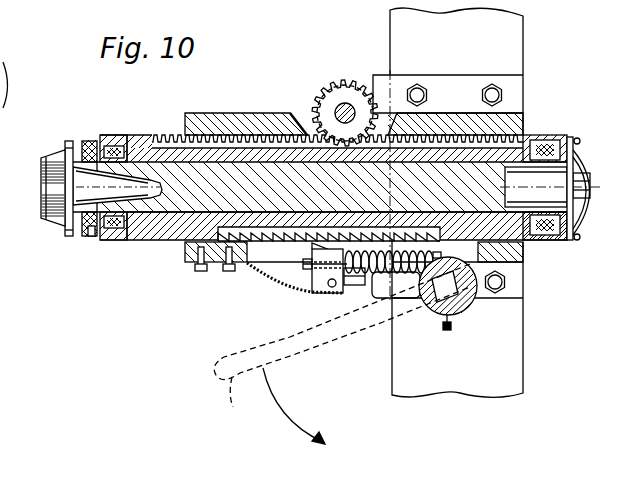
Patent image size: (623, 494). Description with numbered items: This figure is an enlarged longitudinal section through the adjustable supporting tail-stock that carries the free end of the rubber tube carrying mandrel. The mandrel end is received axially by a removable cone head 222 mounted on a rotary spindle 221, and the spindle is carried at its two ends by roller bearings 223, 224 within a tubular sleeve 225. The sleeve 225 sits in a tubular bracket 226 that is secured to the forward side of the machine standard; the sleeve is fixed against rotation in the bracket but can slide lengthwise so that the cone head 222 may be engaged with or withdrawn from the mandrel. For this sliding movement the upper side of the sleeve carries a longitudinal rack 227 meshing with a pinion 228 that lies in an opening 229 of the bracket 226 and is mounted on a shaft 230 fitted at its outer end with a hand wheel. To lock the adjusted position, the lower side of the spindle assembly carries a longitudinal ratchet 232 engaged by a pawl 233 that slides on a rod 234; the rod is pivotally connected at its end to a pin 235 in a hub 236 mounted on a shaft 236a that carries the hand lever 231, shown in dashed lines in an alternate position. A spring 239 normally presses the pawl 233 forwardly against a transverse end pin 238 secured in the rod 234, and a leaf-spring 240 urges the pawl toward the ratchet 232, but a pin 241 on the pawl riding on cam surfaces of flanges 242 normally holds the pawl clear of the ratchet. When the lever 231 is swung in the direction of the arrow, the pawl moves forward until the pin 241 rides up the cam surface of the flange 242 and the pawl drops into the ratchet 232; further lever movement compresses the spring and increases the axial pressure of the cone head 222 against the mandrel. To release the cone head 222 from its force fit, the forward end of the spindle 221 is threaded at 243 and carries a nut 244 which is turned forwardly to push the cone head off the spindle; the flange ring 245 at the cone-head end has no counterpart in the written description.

The rotary spindle 221 is at (173, 193).
The cone head 222 is at (46, 195).
The roller bearing 223 is at (112, 143).
The roller bearing 224 is at (545, 241).
The tubular sleeve 225 is at (175, 243).
The tubular bracket 226 is at (242, 123).
The longitudinal rack 227 is at (179, 122).
The pinion 228 is at (333, 83).
The opening 229 is at (299, 113).
The shaft 230 is at (349, 100).
The hand lever 231 is at (342, 354).
The longitudinal ratchet 232 is at (260, 268).
The pawl 233 is at (320, 259).
The rod 234 is at (392, 280).
The pin 235 is at (456, 269).
The hub 236 is at (470, 288).
The shaft 236a is at (463, 303).
The transverse end pin 238 is at (284, 248).
The spring 239 is at (417, 279).
The leaf-spring 240 is at (282, 288).
The pin 241 is at (333, 289).
The flange 242 is at (354, 286).
The thread 243 is at (86, 230).
The nut 244 is at (92, 237).
The flange ring 245 is at (69, 134).